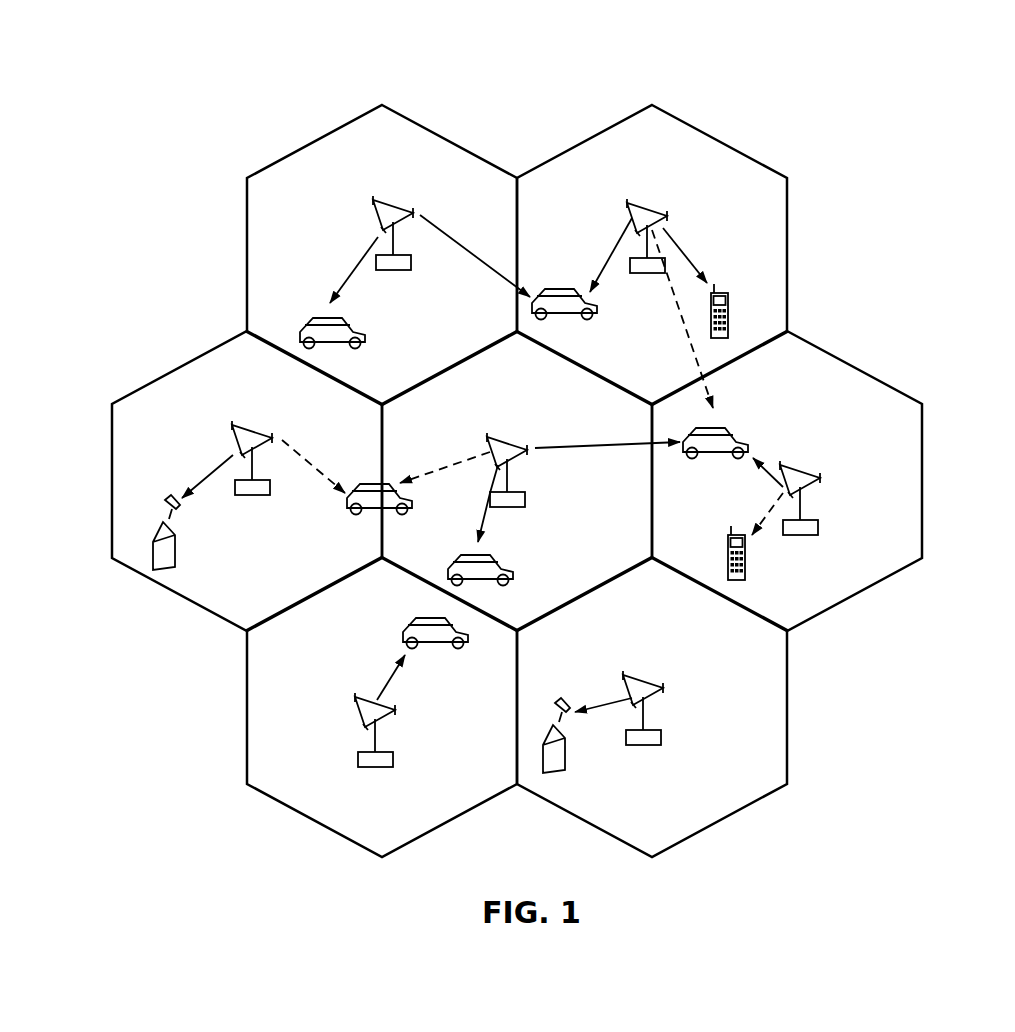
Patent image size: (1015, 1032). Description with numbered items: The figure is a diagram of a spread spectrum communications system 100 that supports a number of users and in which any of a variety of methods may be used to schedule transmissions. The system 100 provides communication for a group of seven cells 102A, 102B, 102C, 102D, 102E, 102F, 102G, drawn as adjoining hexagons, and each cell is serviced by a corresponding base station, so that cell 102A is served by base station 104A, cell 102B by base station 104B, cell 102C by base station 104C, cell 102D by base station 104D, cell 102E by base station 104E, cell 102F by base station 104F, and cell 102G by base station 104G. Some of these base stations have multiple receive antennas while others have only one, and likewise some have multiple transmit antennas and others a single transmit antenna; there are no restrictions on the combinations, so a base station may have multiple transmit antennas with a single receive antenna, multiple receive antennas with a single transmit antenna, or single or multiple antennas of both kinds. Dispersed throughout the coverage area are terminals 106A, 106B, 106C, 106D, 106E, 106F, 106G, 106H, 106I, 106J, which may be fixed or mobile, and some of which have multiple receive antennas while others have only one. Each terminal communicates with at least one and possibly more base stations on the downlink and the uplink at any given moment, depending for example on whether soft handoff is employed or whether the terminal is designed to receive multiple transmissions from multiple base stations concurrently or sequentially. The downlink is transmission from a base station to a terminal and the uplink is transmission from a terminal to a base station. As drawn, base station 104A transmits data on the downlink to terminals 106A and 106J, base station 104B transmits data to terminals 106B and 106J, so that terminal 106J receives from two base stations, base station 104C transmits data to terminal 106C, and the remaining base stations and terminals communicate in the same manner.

The communications system 100 is at (848, 93).
The cell 102A is at (322, 134).
The cell 102B is at (704, 140).
The cell 102C is at (172, 374).
The cell 102D is at (543, 361).
The cell 102E is at (923, 484).
The cell 102F is at (247, 713).
The cell 102G is at (786, 695).
The base station 104A is at (378, 205).
The base station 104B is at (637, 206).
The base station 104C is at (242, 430).
The base station 104D is at (495, 440).
The base station 104E is at (788, 470).
The base station 104F is at (355, 697).
The base station 104G is at (633, 681).
The terminal 106A is at (328, 320).
The terminal 106B is at (717, 291).
The terminal 106C is at (172, 503).
The terminal 106D is at (478, 558).
The terminal 106E is at (722, 428).
The terminal 106F is at (433, 620).
The terminal 106G is at (560, 710).
The terminal 106H is at (370, 488).
The terminal 106I is at (730, 534).
The terminal 106J is at (570, 291).